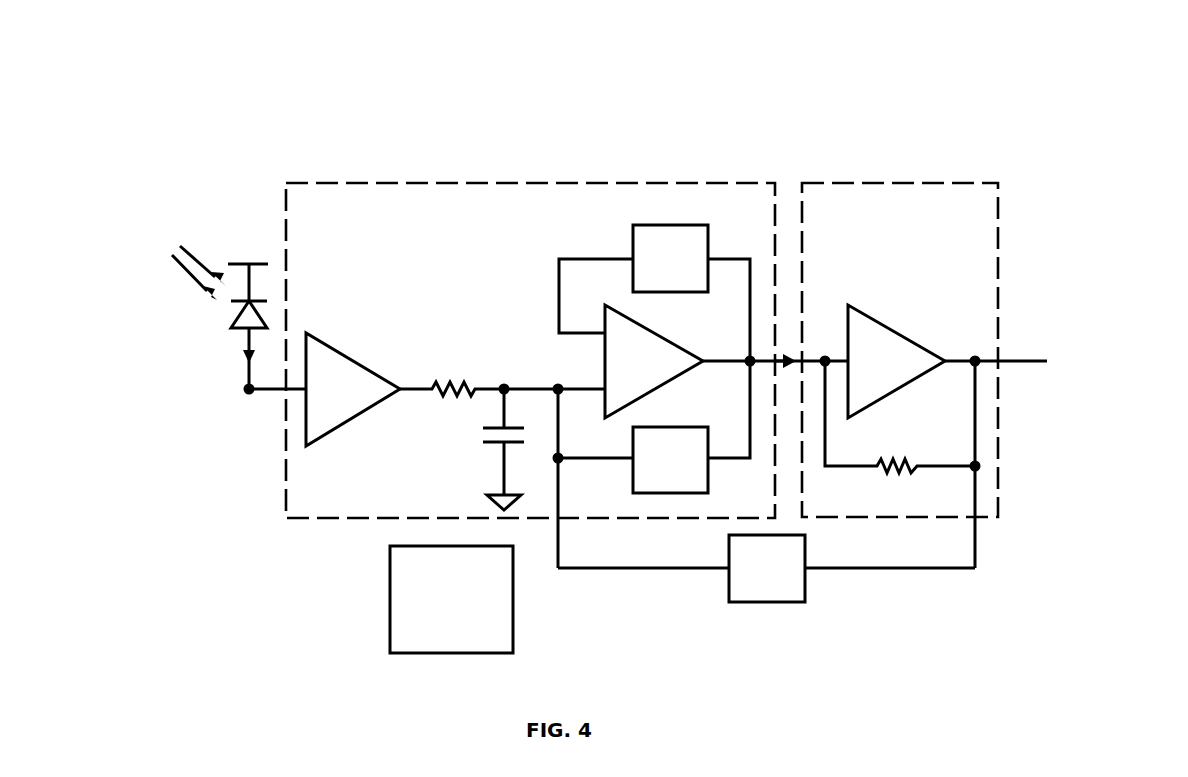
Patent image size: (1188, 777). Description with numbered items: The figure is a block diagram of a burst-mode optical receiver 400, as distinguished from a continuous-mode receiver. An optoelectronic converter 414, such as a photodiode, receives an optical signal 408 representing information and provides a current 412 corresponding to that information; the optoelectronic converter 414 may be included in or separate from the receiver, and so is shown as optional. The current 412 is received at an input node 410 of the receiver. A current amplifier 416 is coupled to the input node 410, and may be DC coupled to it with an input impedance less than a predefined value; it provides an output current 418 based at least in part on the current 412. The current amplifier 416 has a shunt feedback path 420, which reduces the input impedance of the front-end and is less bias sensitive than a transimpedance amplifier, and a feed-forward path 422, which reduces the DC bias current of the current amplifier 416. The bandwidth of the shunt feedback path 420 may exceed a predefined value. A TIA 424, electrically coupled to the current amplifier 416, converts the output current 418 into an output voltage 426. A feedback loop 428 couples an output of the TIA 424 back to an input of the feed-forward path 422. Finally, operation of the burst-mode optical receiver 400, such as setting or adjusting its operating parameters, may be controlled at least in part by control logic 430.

The burst-mode optical receiver 400 is at (938, 115).
The optical signal 408 is at (199, 265).
The input node 410 is at (245, 392).
The current 412 is at (240, 359).
The optoelectronic converter 414 is at (236, 317).
The current amplifier 416 is at (534, 375).
The output current 418 is at (786, 354).
The shunt feedback path 420 is at (654, 293).
The feed-forward path 422 is at (654, 427).
The TIA 424 is at (900, 375).
The output voltage 426 is at (1061, 361).
The feedback loop 428 is at (766, 568).
The control logic 430 is at (451, 599).